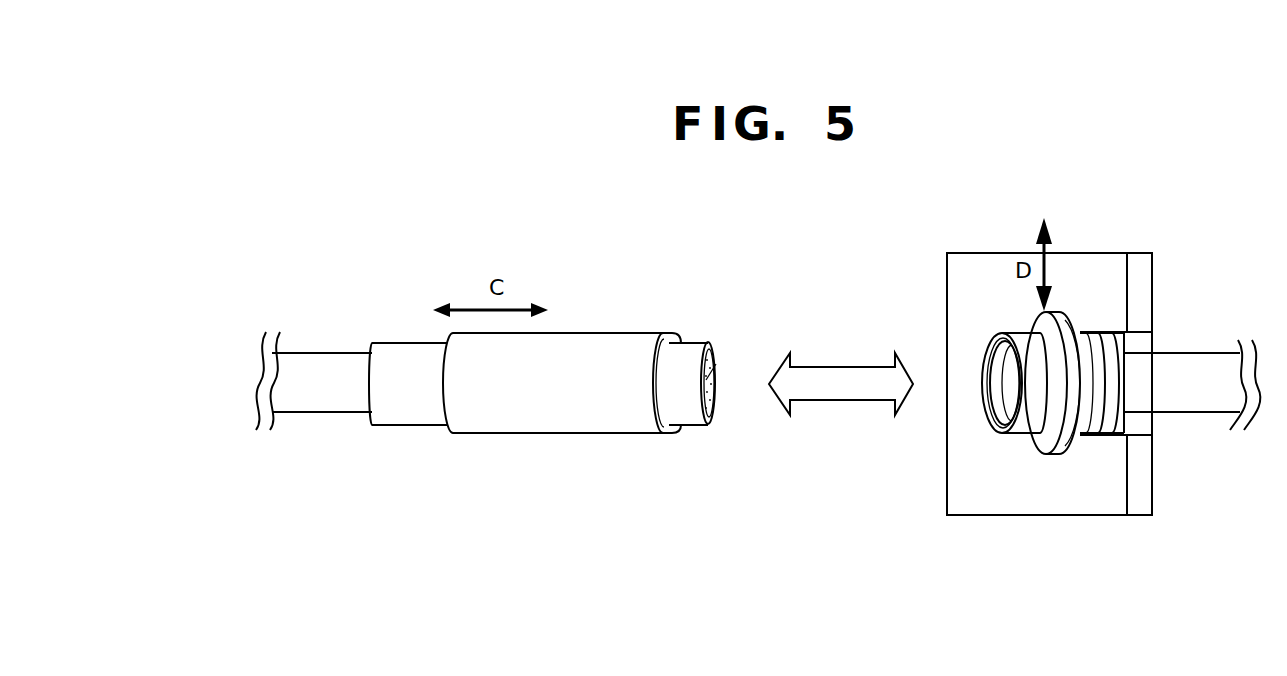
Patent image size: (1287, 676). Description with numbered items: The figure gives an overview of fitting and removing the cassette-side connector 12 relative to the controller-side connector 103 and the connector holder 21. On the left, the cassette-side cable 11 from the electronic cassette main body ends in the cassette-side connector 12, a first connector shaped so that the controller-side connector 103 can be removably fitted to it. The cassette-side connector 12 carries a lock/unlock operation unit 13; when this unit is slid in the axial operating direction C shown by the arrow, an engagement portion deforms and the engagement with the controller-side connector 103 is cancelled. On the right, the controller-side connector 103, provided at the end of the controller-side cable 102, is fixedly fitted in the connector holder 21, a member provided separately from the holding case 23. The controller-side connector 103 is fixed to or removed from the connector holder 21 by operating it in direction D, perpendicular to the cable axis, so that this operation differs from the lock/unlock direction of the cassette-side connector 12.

The cassette-side cable 11 is at (323, 360).
The cassette-side connector 12 is at (545, 394).
The lock/unlock operation unit 13 is at (592, 348).
The connector holder 21 is at (1104, 384).
The holding case 23 is at (1098, 490).
The controller-side cable 102 is at (1172, 367).
The controller-side connector 103 is at (980, 346).